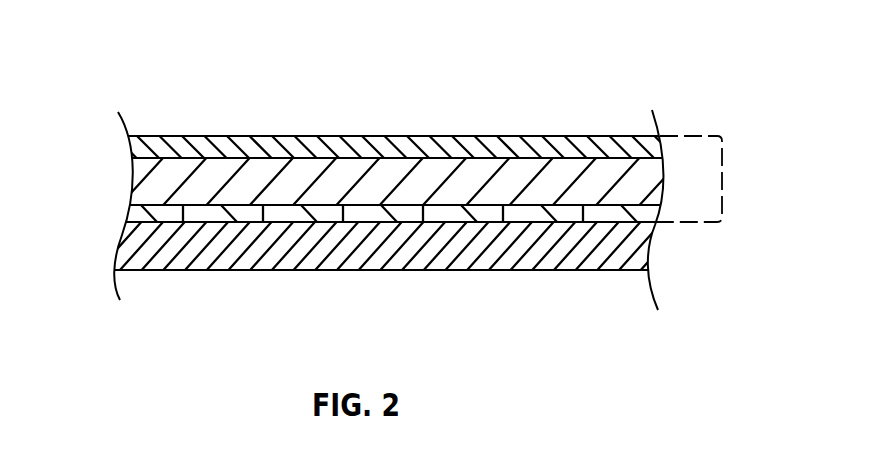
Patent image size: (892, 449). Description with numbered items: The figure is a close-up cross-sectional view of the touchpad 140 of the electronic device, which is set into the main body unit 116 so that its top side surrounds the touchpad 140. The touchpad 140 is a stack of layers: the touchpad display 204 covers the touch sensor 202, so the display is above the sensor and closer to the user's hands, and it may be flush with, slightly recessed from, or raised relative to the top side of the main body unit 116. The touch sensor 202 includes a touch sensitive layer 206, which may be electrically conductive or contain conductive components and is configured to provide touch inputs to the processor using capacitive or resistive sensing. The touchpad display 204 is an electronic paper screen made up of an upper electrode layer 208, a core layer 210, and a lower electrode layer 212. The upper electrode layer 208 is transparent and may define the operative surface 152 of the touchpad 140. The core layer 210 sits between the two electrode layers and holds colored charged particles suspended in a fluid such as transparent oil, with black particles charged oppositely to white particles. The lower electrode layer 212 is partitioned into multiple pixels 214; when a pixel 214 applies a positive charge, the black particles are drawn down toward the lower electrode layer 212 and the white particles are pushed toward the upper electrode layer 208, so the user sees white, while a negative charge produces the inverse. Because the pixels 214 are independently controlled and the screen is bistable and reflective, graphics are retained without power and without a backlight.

The main body unit 116 is at (141, 58).
The touchpad 140 is at (352, 118).
The operative surface 152 is at (220, 135).
The upper electrode layer 208 is at (422, 140).
The core layer 210 is at (482, 165).
The lower electrode layer 212 is at (523, 215).
The pixels 214 is at (328, 217).
The touchpad display 204 is at (722, 177).
The touch sensor 202 is at (615, 256).
The touch sensitive layer 206 is at (550, 262).